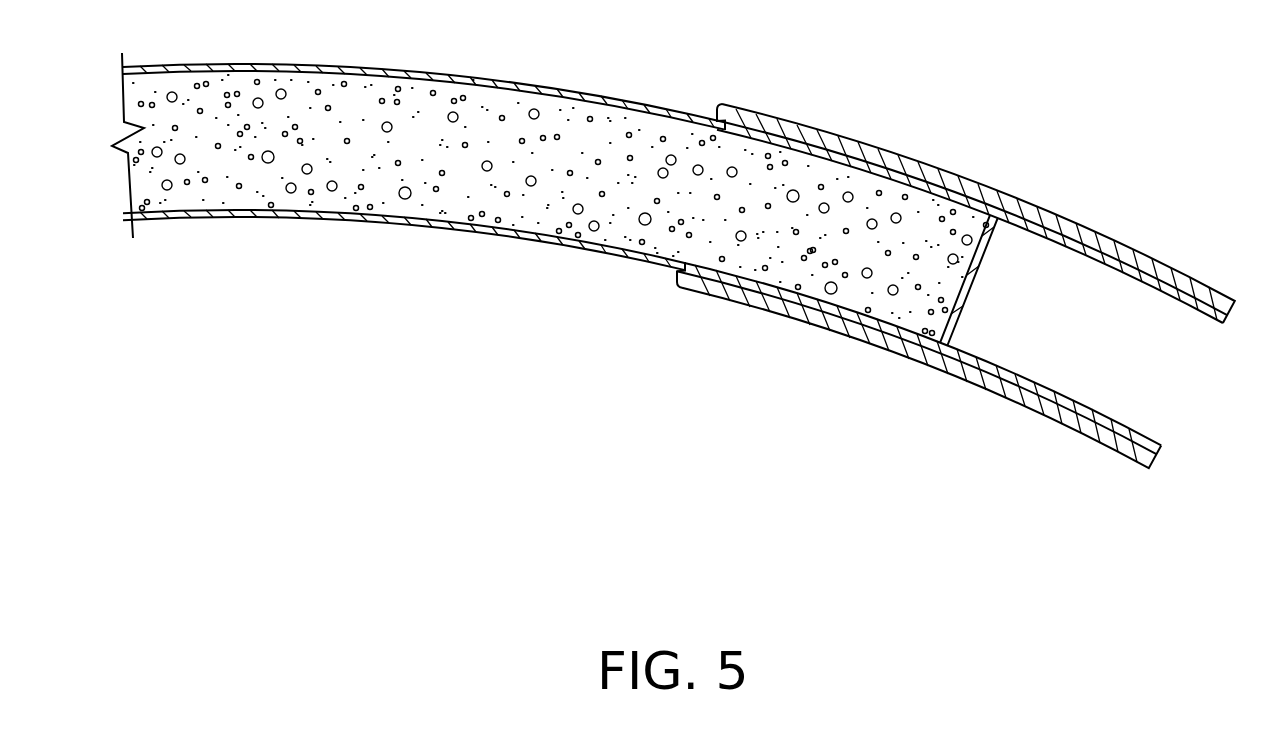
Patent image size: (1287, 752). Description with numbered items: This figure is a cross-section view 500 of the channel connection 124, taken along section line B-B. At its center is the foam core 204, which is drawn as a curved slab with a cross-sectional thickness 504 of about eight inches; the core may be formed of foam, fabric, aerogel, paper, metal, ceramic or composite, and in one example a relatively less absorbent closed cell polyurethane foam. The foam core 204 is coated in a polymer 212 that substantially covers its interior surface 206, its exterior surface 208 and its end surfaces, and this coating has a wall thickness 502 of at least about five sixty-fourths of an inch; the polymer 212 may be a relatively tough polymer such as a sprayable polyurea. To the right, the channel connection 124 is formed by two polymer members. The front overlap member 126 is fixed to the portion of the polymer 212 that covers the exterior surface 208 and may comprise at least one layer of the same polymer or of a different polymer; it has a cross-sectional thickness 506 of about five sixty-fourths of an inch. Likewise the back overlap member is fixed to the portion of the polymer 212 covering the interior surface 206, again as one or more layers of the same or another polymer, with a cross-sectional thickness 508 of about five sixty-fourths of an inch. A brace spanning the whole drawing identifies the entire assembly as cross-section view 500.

The channel connection 124 is at (982, 317).
The front overlap member 126 is at (1150, 259).
The foam core 204 is at (422, 127).
The interior surface 206 is at (385, 219).
The exterior surface 208 is at (377, 74).
The polymer 212 is at (428, 227).
The cross-section view 500 is at (1232, 550).
The wall thickness 502 is at (120, 213).
The cross-sectional thickness 504 is at (80, 73).
The cross-sectional thickness 506 is at (1206, 286).
The cross-sectional thickness 508 is at (1085, 406).